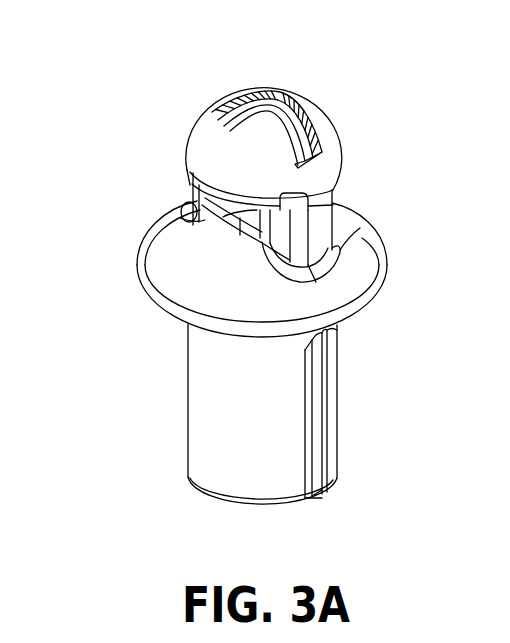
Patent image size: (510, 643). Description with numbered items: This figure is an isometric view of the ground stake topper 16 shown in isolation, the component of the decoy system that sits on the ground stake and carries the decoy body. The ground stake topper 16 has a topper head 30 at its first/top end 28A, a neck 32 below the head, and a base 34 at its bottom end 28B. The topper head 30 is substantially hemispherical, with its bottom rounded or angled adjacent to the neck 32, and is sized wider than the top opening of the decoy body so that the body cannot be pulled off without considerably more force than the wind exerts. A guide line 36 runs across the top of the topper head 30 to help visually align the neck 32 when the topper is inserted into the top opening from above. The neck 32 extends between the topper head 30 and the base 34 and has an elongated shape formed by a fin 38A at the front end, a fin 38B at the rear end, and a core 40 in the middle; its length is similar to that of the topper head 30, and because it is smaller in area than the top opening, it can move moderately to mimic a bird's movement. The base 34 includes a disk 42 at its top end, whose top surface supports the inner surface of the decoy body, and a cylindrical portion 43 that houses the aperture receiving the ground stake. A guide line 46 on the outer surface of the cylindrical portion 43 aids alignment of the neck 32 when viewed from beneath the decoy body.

The ground stake topper 16 is at (98, 98).
The first/top end 28A is at (270, 90).
The bottom end 28B is at (203, 465).
The topper head 30 is at (208, 137).
The neck 32 is at (170, 192).
The base 34 is at (190, 414).
The guide line 36 is at (303, 133).
The fin 38A is at (192, 206).
The fin 38B is at (282, 228).
The core 40 is at (240, 228).
The disk 42 is at (350, 238).
The cylindrical portion 43 is at (203, 388).
The guide line 46 is at (318, 467).